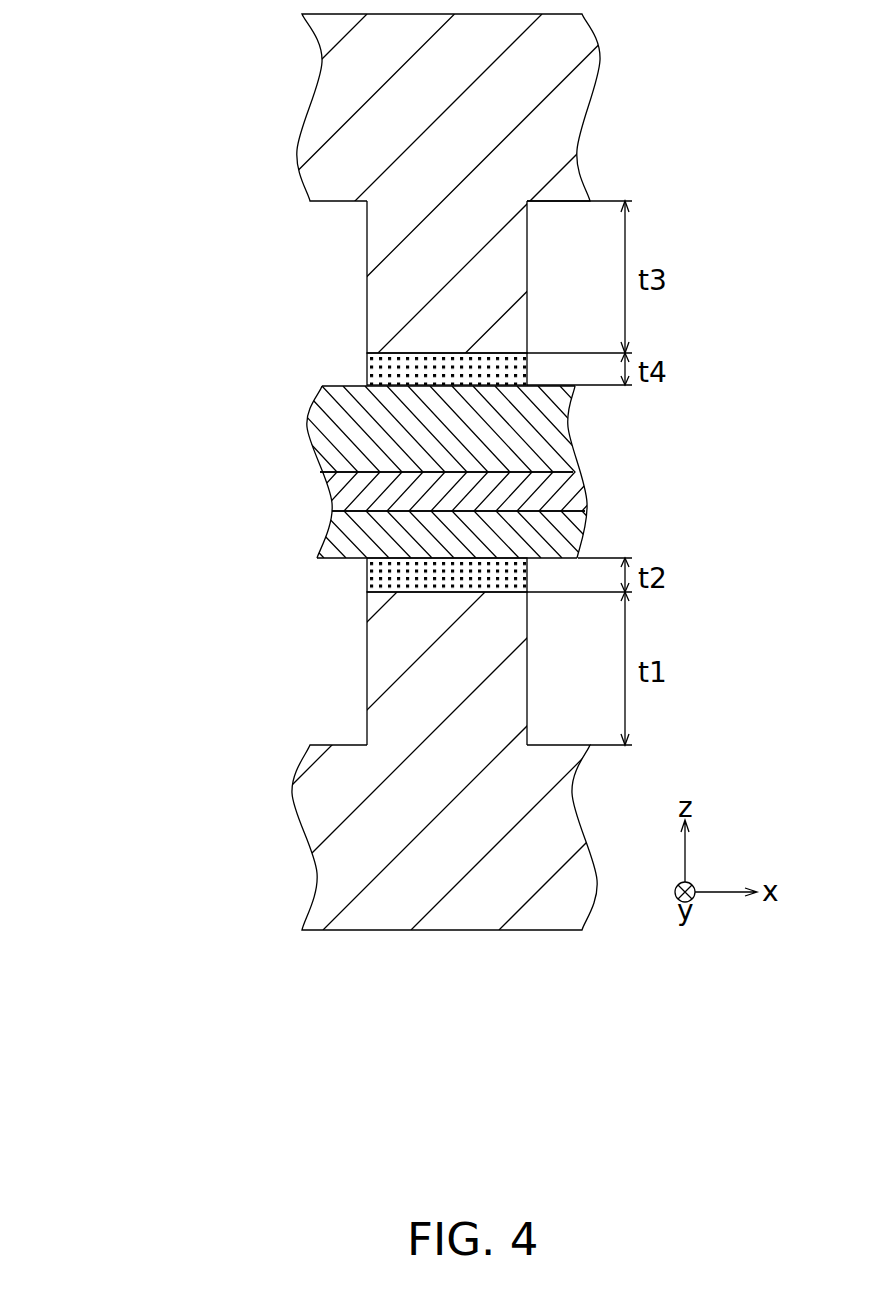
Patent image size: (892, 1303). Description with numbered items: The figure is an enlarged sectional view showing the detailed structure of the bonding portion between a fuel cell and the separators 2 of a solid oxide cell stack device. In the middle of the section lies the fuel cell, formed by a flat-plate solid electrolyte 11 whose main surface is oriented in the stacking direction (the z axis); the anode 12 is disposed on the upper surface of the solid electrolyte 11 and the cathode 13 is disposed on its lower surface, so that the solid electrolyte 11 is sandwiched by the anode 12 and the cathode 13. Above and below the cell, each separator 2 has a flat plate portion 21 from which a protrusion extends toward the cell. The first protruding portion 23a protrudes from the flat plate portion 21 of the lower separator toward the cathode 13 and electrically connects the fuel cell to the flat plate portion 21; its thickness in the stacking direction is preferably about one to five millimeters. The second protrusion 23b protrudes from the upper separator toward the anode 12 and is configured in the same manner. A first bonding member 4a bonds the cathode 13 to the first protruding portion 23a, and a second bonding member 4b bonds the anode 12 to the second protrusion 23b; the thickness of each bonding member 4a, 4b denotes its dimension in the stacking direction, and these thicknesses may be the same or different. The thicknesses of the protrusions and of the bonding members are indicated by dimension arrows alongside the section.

The separator 2 is at (158, 83).
The flat plate portion 21 is at (337, 103).
The first protruding portion 23a is at (383, 667).
The second protrusion 23b is at (373, 252).
The first bonding member 4a is at (372, 575).
The second bonding member 4b is at (372, 364).
The solid electrolyte 11 is at (560, 493).
The anode 12 is at (562, 420).
The cathode 13 is at (563, 528).